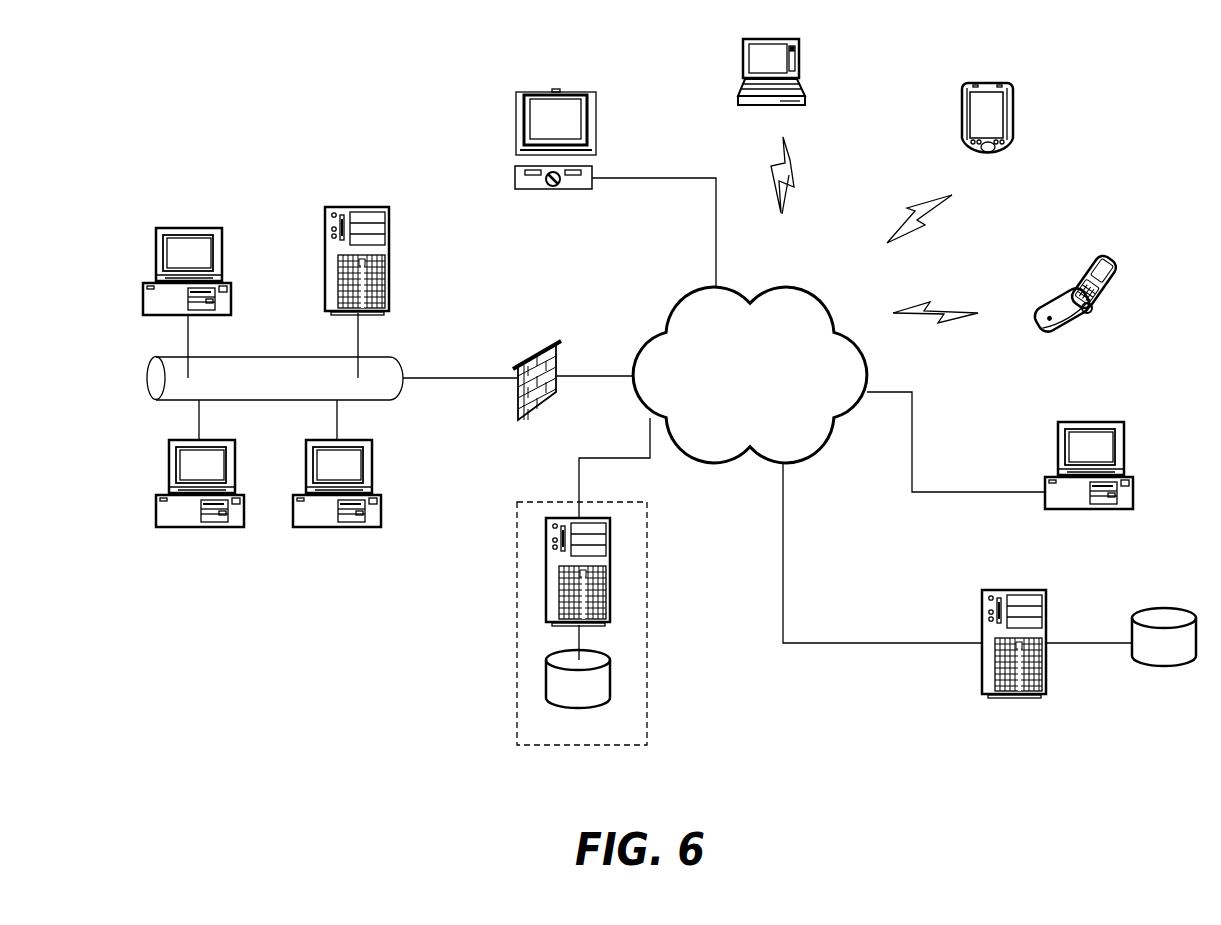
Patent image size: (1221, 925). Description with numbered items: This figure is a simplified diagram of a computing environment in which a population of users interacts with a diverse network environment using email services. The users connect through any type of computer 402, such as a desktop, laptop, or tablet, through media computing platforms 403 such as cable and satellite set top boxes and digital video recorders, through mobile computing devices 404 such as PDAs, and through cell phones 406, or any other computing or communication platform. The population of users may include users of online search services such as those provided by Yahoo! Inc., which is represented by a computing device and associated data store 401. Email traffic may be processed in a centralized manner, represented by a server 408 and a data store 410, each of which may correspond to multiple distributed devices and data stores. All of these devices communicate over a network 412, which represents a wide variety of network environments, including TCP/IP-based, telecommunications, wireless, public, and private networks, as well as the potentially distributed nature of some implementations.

The computing device and associated data store 401 is at (647, 655).
The computer 402 is at (156, 258).
The media computing platform 403 is at (515, 178).
The mobile computing device 404 is at (962, 94).
The cell phone 406 is at (1070, 265).
The server 408 is at (990, 590).
The data store 410 is at (1163, 608).
The network 412 is at (685, 303).